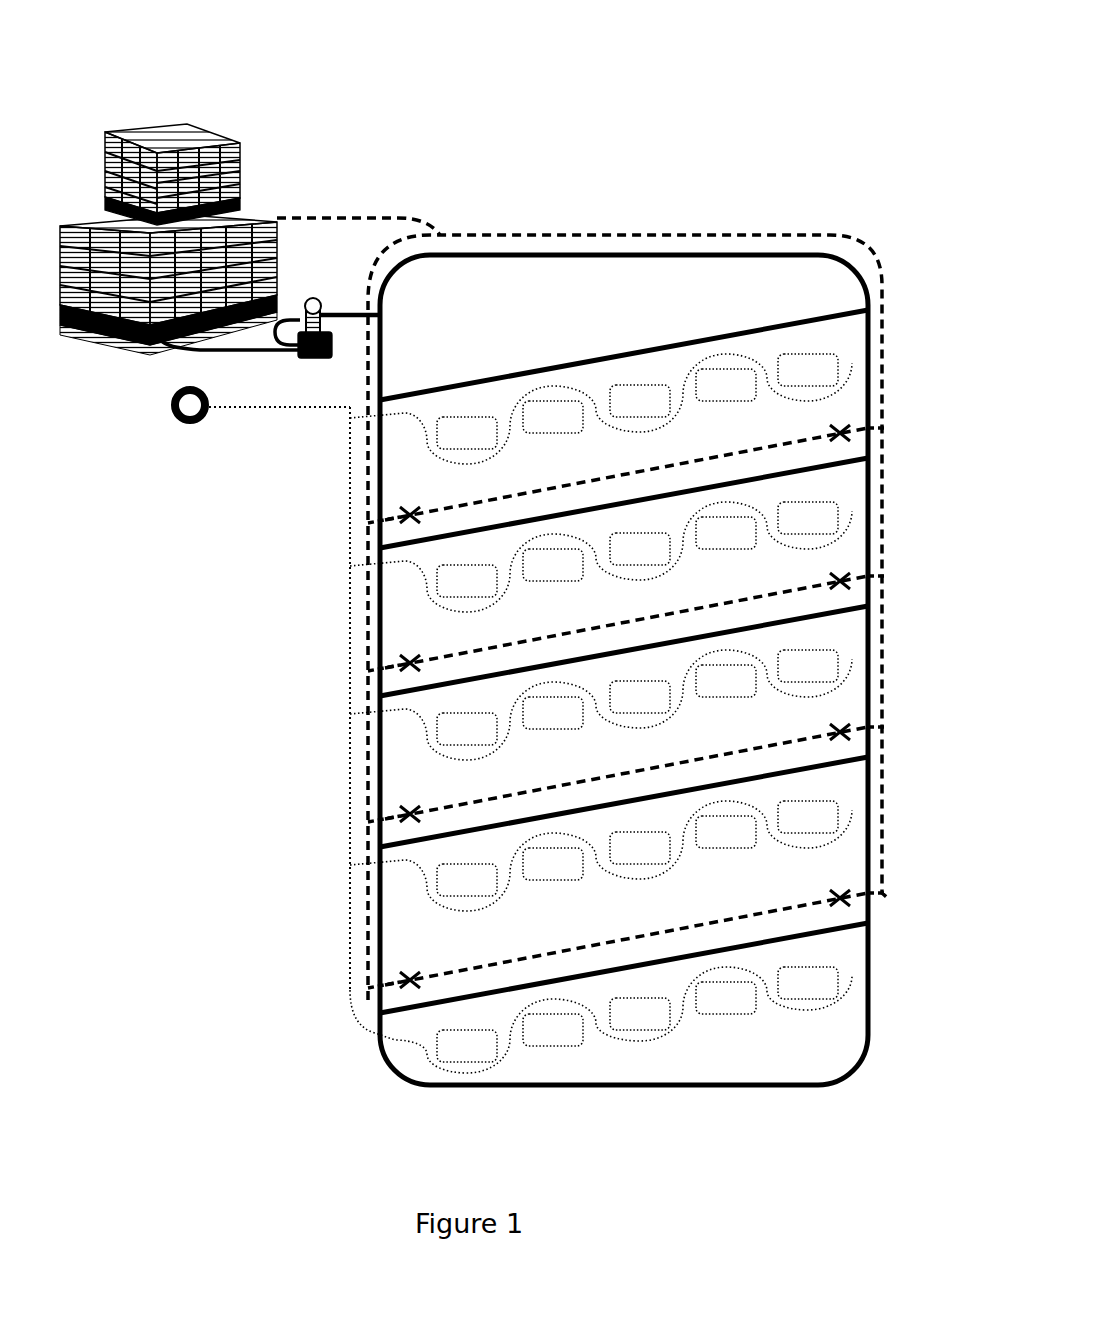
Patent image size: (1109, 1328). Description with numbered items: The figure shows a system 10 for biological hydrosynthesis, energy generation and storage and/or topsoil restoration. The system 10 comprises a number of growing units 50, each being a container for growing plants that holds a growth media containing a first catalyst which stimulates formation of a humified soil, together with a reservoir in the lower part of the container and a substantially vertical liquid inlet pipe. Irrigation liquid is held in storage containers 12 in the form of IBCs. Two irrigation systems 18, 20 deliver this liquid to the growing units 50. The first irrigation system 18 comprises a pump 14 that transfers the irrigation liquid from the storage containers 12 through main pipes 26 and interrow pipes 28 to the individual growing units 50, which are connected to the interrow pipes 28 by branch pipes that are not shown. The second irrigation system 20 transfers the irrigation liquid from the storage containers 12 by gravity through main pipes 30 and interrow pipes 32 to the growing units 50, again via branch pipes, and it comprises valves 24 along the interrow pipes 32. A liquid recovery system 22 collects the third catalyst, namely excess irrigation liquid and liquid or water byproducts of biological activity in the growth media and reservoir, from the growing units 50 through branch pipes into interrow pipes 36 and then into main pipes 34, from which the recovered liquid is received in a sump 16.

The system 10 is at (848, 92).
The storage containers 12 is at (258, 187).
The pump 14 is at (283, 362).
The sump 16 is at (163, 425).
The irrigation system 18 is at (395, 318).
The irrigation system 20 is at (437, 228).
The liquid recovery system 22 is at (325, 420).
The valves 24 is at (848, 577).
The main pipes 26 is at (743, 1097).
The interrow pipes 28 is at (422, 1015).
The main pipes 30 is at (845, 230).
The interrow pipes 32 is at (780, 440).
The main pipes 34 is at (348, 830).
The interrow pipes 36 is at (396, 732).
The growing units 50 is at (838, 962).